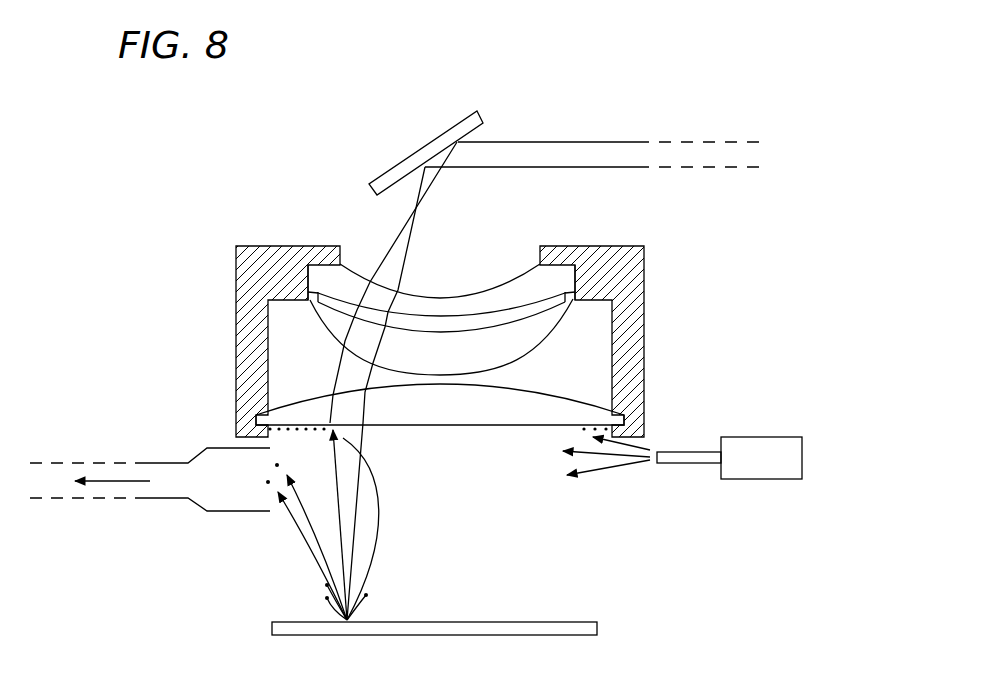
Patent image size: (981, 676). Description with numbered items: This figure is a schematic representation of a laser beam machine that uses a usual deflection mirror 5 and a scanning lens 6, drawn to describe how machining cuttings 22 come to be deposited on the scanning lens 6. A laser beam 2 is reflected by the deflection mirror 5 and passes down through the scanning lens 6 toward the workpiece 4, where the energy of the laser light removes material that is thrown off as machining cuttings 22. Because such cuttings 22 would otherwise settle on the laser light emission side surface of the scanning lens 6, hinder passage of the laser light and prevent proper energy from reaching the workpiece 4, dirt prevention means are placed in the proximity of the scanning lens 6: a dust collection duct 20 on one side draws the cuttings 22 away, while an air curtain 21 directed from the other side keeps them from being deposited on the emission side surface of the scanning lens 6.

The light beam 2 is at (569, 142).
The sample substrate 4 is at (590, 630).
The deflection mirror 5 is at (478, 110).
The scanning lens 6 is at (505, 425).
The dust collection duct 20 is at (170, 499).
The air curtain 21 is at (615, 463).
The machining cuttings 22 is at (325, 598).